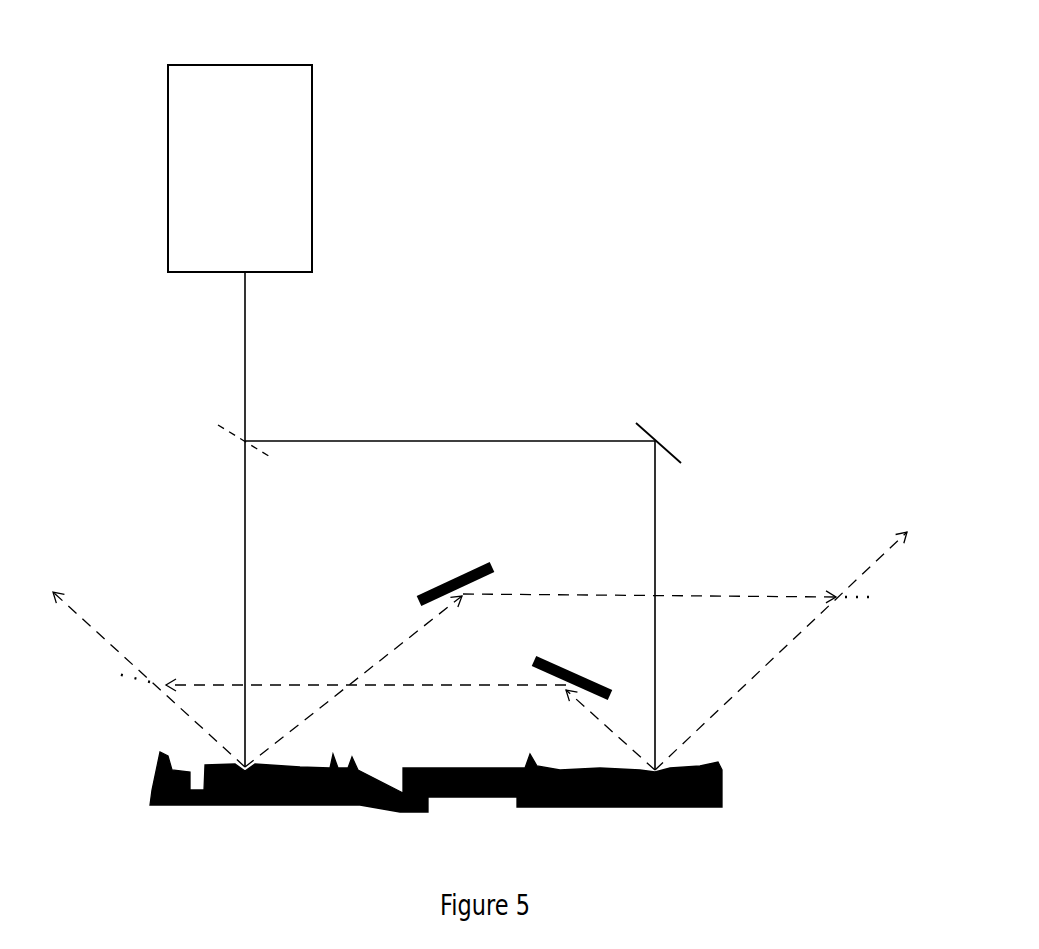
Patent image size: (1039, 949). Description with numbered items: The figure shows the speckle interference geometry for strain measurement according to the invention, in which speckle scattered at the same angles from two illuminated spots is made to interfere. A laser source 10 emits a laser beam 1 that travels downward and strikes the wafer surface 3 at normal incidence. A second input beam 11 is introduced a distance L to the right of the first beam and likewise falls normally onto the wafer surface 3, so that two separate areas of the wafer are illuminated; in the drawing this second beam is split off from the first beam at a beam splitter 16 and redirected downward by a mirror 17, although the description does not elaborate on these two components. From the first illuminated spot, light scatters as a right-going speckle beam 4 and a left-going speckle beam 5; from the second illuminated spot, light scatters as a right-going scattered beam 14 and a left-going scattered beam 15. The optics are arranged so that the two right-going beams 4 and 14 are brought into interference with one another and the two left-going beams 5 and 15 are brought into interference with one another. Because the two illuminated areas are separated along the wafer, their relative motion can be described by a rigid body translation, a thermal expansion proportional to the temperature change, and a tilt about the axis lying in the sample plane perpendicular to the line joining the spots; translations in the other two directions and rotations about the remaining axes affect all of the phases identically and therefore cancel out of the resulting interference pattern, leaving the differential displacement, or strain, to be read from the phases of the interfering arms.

The laser source 10 is at (162, 163).
The beam splitter 16 is at (223, 435).
The laser beam 1 is at (261, 603).
The second input beam 11 is at (471, 605).
The deflecting mirror 17 is at (673, 440).
The speckle beam 5 is at (149, 679).
The speckle beam 4 is at (325, 712).
The scattered beam 15 is at (382, 715).
The scattered beam 14 is at (762, 682).
The wafer surface 3 is at (724, 787).